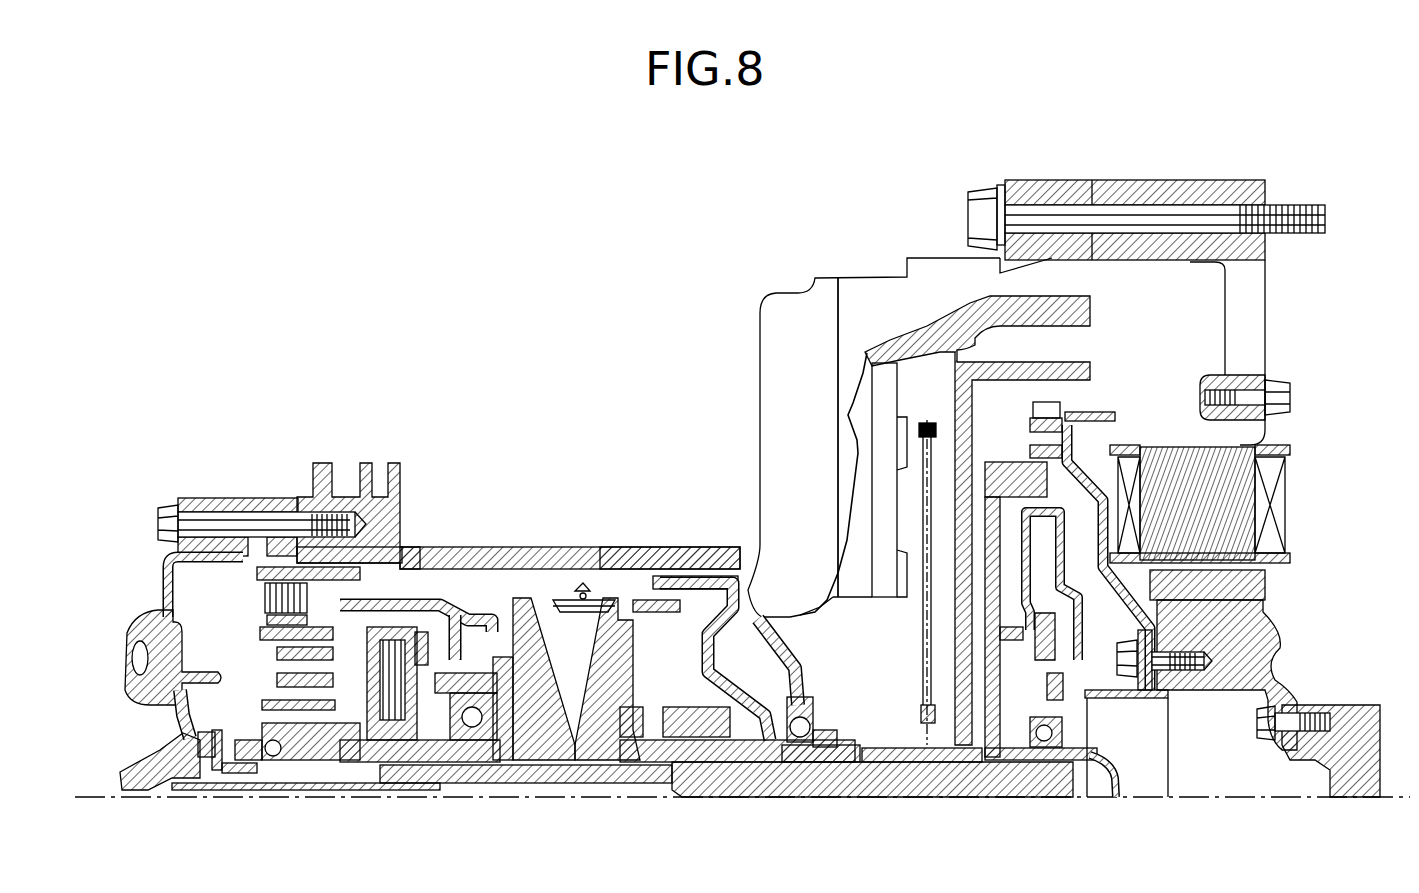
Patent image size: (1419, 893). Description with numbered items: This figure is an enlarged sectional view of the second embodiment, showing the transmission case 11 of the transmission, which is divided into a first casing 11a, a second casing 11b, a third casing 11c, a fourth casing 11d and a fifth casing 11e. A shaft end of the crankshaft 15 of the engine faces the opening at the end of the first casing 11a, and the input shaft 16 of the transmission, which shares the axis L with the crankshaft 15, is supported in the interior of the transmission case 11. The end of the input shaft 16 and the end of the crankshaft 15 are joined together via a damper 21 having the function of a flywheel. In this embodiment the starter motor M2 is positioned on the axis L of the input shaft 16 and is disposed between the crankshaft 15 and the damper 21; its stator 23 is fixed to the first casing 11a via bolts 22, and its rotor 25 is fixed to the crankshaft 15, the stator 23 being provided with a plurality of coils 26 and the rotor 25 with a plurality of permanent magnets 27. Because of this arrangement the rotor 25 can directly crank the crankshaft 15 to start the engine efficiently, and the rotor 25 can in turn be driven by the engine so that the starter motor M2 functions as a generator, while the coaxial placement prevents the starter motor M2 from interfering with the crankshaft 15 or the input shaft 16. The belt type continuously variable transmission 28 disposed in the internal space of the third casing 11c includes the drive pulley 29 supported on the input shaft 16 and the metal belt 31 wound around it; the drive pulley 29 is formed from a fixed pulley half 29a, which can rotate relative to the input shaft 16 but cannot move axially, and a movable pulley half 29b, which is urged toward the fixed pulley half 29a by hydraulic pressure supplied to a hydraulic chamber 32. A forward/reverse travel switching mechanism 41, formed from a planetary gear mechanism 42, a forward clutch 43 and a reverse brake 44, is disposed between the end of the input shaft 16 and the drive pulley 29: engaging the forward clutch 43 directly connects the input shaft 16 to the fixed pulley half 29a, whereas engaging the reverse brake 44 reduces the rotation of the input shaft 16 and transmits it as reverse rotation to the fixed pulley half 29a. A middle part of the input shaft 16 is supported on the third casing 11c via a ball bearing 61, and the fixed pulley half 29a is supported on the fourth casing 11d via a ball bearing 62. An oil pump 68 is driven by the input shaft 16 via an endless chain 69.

The transmission case 11 is at (749, 316).
The first casing 11a is at (1150, 188).
The second casing 11b is at (865, 290).
The third casing 11c is at (655, 547).
The fourth casing 11d is at (269, 462).
The fifth casing 11e is at (213, 498).
The crankshaft 15 is at (1358, 716).
The input shaft 16 is at (798, 790).
The damper 21 is at (1114, 404).
The bolts 22 is at (1290, 393).
The stator 23 is at (1291, 445).
The rotor 25 is at (1276, 662).
The coils 26 is at (1272, 521).
The permanent magnets 27 is at (1245, 585).
The belt type continuously variable transmission 28 is at (506, 601).
The drive pulley 29 is at (636, 470).
The fixed pulley half 29a is at (535, 597).
The movable pulley half 29b is at (602, 597).
The metal belt 31 is at (565, 617).
The hydraulic chamber 32 is at (670, 676).
The forward/reverse travel switching mechanism 41 is at (215, 608).
The planetary gear mechanism 42 is at (254, 700).
The forward clutch 43 is at (402, 625).
The reverse brake 44 is at (335, 545).
The ball bearing 61 is at (812, 728).
The ball bearing 62 is at (468, 745).
The oil pump 68 is at (852, 590).
The endless chain 69 is at (927, 430).
The axis L is at (590, 800).
The starter motor M2 is at (1243, 621).